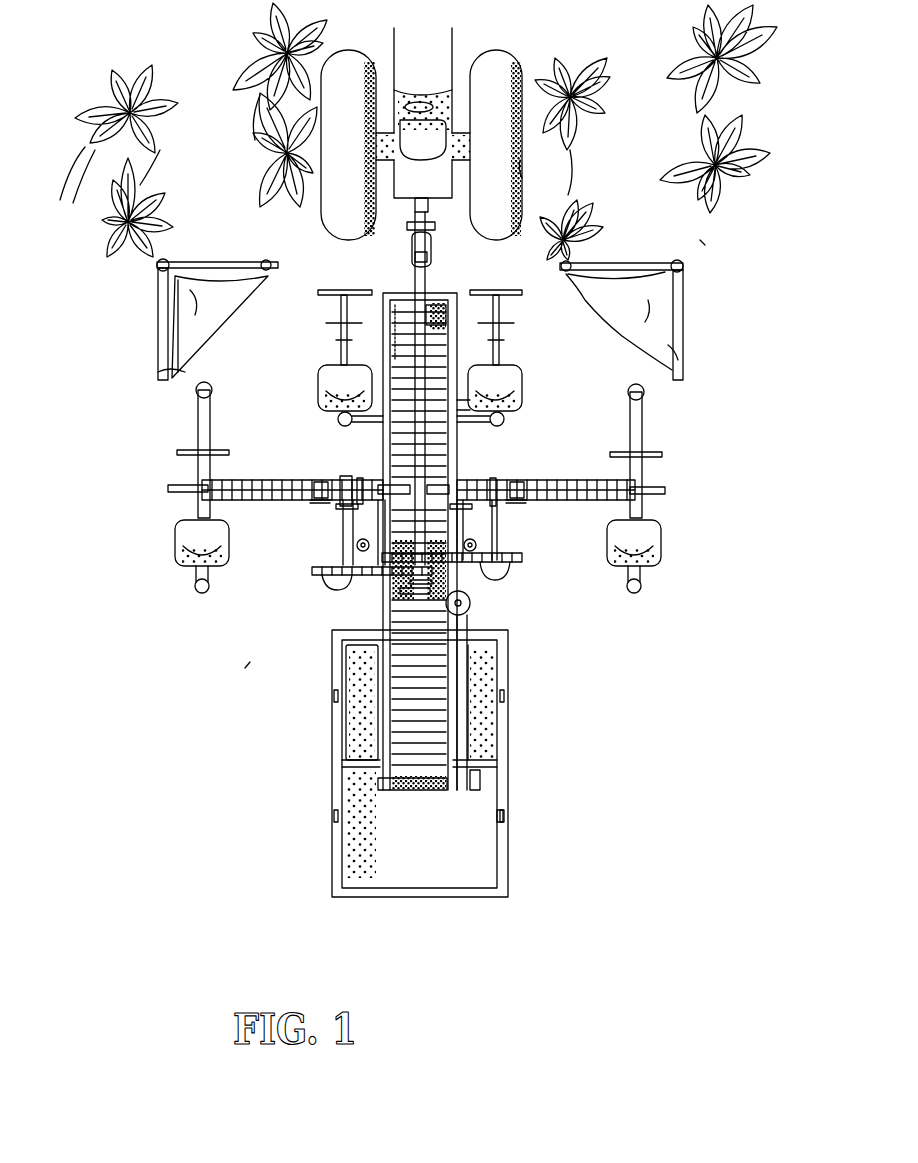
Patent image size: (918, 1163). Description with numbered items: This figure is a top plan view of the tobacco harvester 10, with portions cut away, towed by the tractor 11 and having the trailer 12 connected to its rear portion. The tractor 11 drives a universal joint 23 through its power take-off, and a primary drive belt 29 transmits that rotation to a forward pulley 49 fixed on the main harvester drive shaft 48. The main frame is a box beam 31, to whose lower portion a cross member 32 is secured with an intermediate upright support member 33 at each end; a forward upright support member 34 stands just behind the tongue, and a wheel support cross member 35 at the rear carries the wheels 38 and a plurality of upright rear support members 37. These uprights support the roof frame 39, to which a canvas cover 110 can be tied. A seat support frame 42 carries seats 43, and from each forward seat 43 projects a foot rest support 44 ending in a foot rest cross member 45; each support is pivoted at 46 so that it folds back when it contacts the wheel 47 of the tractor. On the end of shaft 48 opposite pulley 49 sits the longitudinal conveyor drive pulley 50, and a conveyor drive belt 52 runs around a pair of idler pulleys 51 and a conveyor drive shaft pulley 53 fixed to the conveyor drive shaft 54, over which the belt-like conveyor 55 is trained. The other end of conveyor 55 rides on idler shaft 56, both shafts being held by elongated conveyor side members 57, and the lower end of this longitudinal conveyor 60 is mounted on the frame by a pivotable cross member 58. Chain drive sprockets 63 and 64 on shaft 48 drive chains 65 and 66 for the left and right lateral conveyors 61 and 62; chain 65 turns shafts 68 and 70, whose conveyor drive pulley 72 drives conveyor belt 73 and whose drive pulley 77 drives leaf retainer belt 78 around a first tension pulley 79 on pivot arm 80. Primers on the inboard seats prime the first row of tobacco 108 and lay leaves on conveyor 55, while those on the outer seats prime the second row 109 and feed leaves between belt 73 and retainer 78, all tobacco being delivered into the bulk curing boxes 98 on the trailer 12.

The harvester 10 is at (250, 662).
The tractor 11 is at (495, 30).
The trailer 12 is at (512, 930).
The universal joint 23 is at (400, 205).
The primary drive belt 29 is at (407, 226).
The box beam 31 is at (428, 278).
The cross member 32 is at (470, 420).
The intermediate upright support member 33 is at (338, 418).
The forward upright support member 34 is at (445, 240).
The wheel support cross member 35 is at (522, 558).
The upright rear support member 37 is at (345, 590).
The wheels 38 is at (343, 510).
The roof frame 39 is at (712, 242).
The seat support frame 42 is at (198, 430).
The seat 43 is at (318, 378).
The foot rest support 44 is at (340, 320).
The foot rest cross member 45 is at (320, 295).
The pivot 46 is at (320, 340).
The tractor wheel 47 is at (322, 205).
The main harvester drive shaft 48 is at (435, 445).
The forward pulley 49 is at (466, 200).
The longitudinal conveyor drive pulley 50 is at (375, 660).
The idler pulleys 51 is at (505, 655).
The conveyor drive belt 52 is at (467, 700).
The conveyor drive shaft pulley 53 is at (480, 780).
The conveyor drive shaft 54 is at (500, 818).
The conveyor 55 is at (440, 740).
The idler shaft 56 is at (385, 300).
The conveyor side members 57 is at (445, 320).
The cross member 58 is at (383, 293).
The longitudinal conveyor 60 is at (410, 800).
The left lateral conveyor 61 is at (148, 492).
The right lateral conveyor 62 is at (715, 486).
The chain drive sprocket 63 is at (400, 592).
The chain drive sprocket 64 is at (470, 603).
The drive chain 65 is at (330, 578).
The drive chain 66 is at (470, 620).
The shaft 68 is at (358, 548).
The shaft 70 is at (346, 512).
The conveyor drive pulley 72 is at (360, 478).
The conveyor belt 73 is at (228, 480).
The drive pulley 77 is at (345, 478).
The leaf retainer belt 78 is at (232, 500).
The first tension pulley 79 is at (318, 482).
The pivot arm 80 is at (338, 478).
The bulk curing boxes 98 is at (345, 760).
The first row of tobacco 108 is at (272, 122).
The second row of tobacco 109 is at (100, 170).
The cover 110 is at (162, 378).